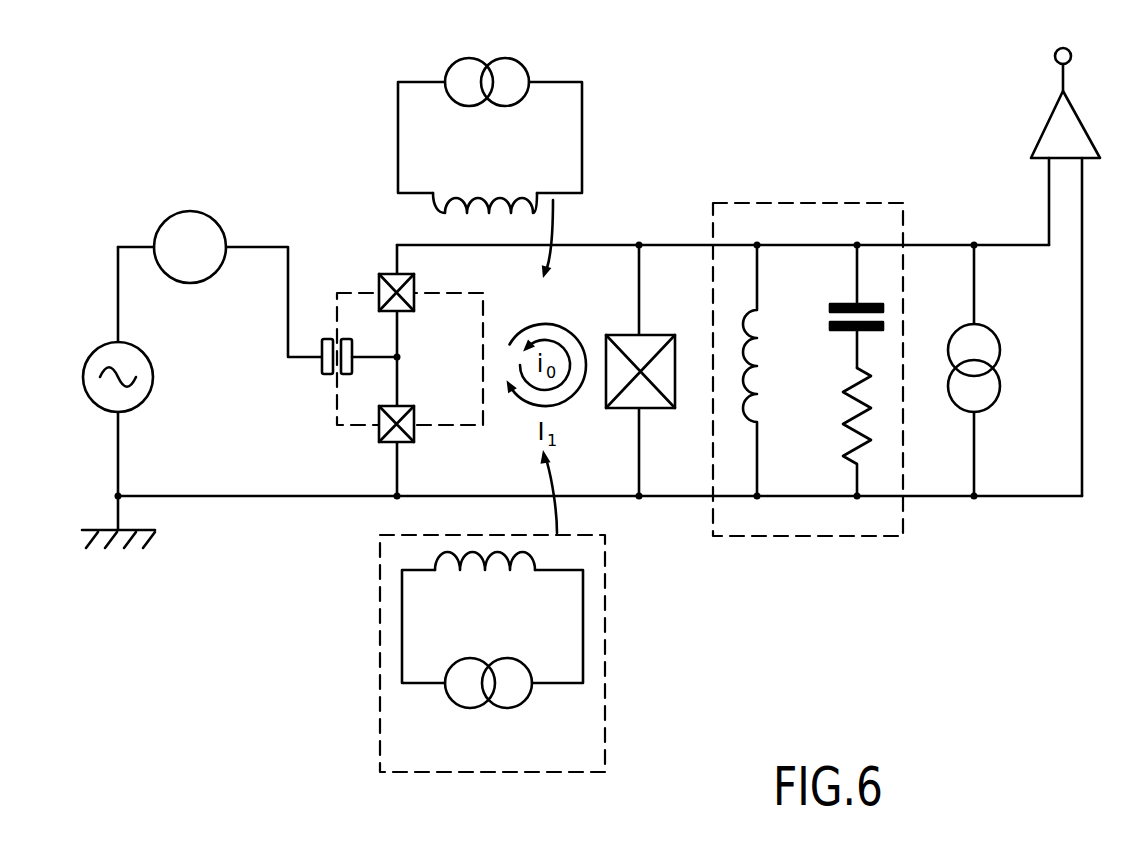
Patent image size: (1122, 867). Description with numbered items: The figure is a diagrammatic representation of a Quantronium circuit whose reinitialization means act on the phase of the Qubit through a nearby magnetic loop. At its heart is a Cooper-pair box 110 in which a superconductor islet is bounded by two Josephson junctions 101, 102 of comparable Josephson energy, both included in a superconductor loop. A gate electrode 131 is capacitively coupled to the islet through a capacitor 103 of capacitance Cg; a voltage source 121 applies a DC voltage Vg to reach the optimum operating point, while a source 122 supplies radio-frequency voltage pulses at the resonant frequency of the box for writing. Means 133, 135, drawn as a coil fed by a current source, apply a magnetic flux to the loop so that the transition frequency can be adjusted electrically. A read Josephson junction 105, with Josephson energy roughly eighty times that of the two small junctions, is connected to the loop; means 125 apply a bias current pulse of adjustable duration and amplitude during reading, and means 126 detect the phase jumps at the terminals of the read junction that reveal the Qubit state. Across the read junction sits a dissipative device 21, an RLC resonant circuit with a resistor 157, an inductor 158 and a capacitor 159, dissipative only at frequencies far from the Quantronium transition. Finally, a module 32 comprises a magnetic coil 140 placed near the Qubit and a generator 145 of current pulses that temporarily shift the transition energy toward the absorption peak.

The voltage source 121 is at (172, 215).
The source 122 is at (153, 372).
The electrode 131 is at (326, 338).
The capacitor 103 is at (312, 385).
The Cooper-pair box 110 is at (419, 359).
The Josephson junction 101 is at (382, 273).
The Josephson junction 102 is at (386, 441).
The means for applying a magnetic flux 135 is at (490, 110).
The means for applying a magnetic flux 133 is at (520, 192).
The read Josephson junction 105 is at (655, 409).
The dissipative device 21 is at (808, 401).
The inductor 158 is at (764, 335).
The capacitor 159 is at (846, 334).
The resistor 157 is at (840, 420).
The means for applying a current pulse 125 is at (954, 356).
The means for detecting phase jumps 126 is at (1047, 125).
The module 32 is at (526, 653).
The magnetic coil 140 is at (520, 572).
The generator 145 is at (503, 706).